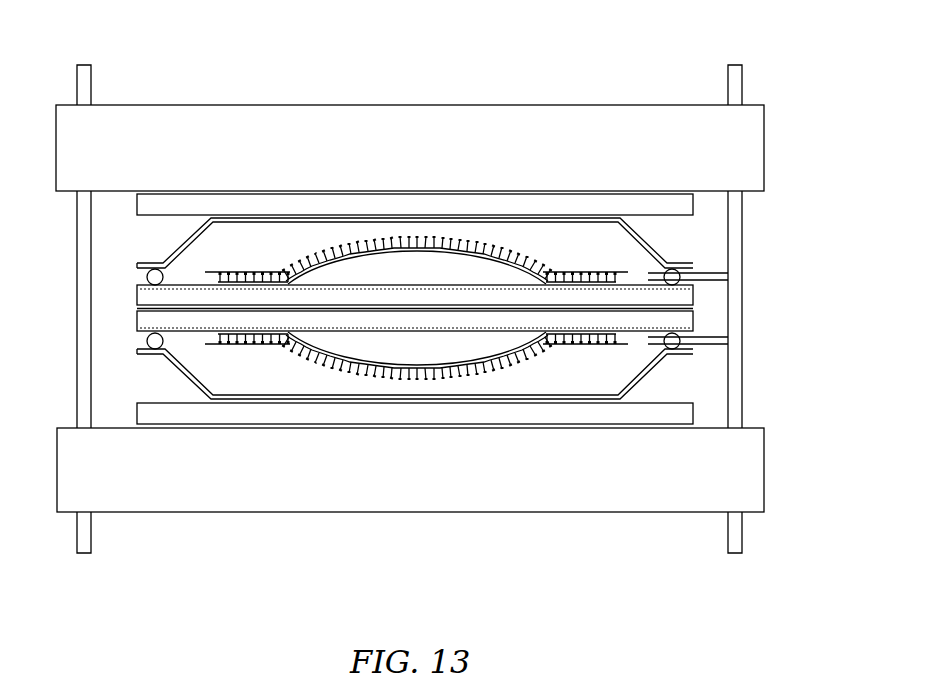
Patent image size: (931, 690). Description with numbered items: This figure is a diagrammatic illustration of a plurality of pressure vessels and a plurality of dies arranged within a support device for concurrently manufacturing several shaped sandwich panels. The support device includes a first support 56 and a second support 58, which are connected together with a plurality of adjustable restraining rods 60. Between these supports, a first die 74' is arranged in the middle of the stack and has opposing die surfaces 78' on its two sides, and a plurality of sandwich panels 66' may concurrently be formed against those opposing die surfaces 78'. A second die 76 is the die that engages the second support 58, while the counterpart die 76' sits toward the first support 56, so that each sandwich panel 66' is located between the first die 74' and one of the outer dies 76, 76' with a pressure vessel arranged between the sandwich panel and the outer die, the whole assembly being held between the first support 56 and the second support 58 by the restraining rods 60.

The first support 56 is at (764, 468).
The second support 58 is at (764, 150).
The adjustable restraining rods 60 is at (77, 83).
The sandwich panels 66' is at (416, 311).
The first die 74' is at (355, 308).
The second die 76 is at (356, 210).
The lower outer electrode plate 76' is at (359, 407).
The die surfaces 78' is at (437, 313).